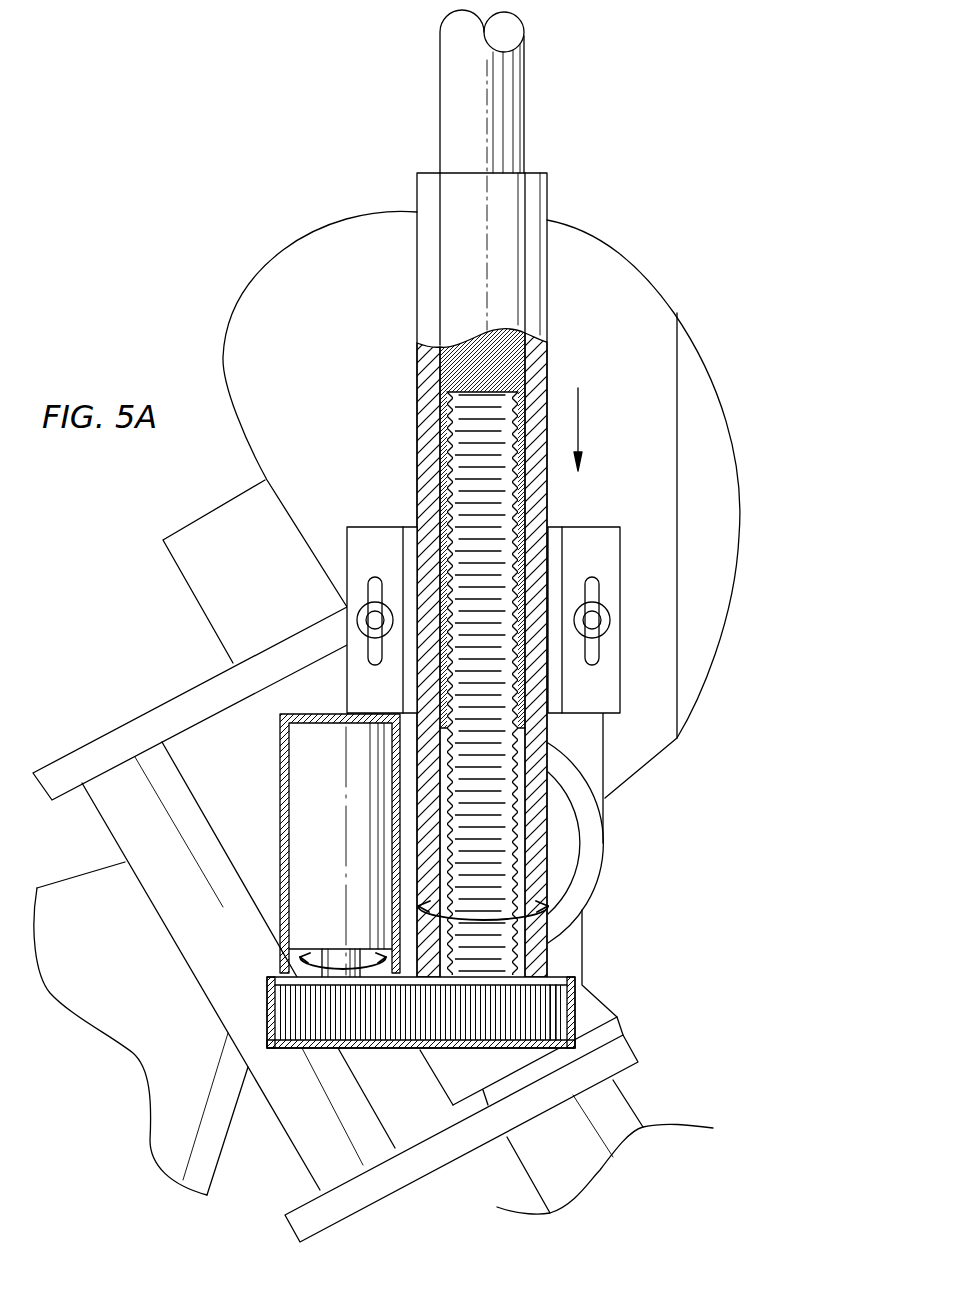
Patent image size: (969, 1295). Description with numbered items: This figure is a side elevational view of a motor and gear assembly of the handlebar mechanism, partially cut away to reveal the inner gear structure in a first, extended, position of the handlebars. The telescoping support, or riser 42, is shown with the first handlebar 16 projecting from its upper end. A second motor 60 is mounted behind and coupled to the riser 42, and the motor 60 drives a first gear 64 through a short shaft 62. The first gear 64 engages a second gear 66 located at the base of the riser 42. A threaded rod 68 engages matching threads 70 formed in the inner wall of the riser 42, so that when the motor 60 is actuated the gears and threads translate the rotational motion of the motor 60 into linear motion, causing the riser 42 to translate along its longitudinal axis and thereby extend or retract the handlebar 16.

The first handlebar 16 is at (525, 97).
The telescoping support 42 is at (547, 196).
The second motor 60 is at (312, 822).
The short shaft 62 is at (335, 955).
The first gear 64 is at (357, 1025).
The second gear 66 is at (550, 1023).
The threaded rod 68 is at (515, 838).
The matching threads 70 is at (515, 483).